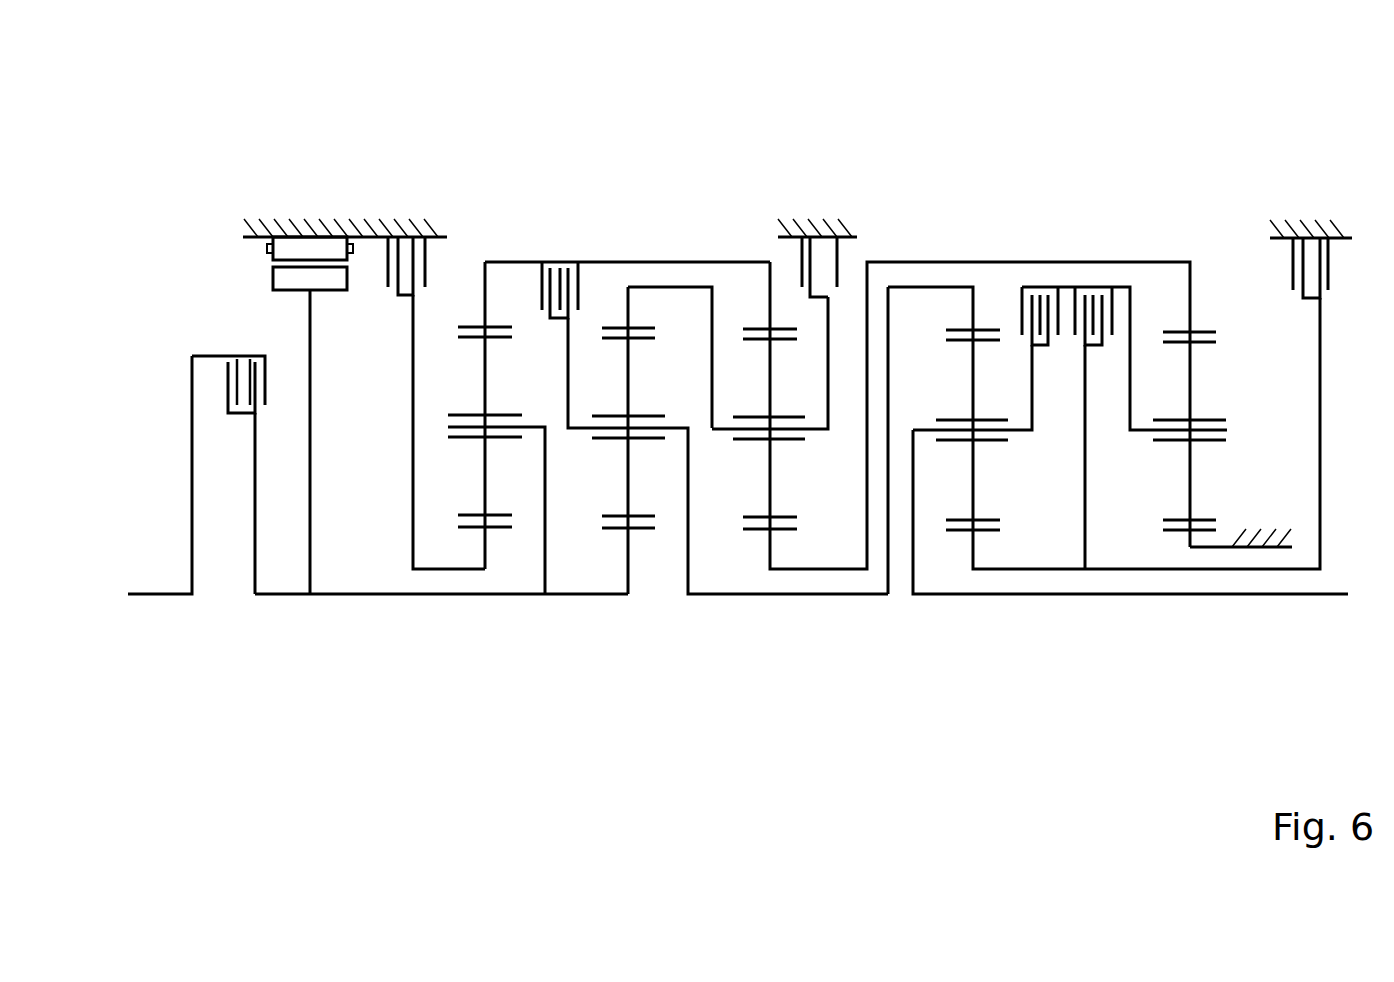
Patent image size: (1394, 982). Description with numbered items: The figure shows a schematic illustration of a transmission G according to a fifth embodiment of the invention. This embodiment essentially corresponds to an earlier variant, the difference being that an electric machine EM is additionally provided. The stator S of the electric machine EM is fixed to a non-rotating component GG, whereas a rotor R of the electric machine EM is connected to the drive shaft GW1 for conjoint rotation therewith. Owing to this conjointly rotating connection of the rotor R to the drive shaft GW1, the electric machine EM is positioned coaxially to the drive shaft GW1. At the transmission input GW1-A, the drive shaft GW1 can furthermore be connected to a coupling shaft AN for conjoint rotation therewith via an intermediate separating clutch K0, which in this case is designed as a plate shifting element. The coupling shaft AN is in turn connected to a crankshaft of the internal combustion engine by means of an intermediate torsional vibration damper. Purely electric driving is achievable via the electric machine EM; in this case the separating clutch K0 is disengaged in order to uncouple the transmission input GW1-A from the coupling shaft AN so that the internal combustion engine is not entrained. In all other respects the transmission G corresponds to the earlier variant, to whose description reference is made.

The transmission G is at (199, 185).
The non-rotating component GG is at (324, 234).
The stator S is at (285, 252).
The electric machine EM is at (262, 263).
The rotor R is at (287, 279).
The separating clutch K0 is at (223, 382).
The coupling shaft AN is at (160, 588).
The transmission input GW1-A is at (251, 594).
The drive shaft GW1 is at (362, 596).